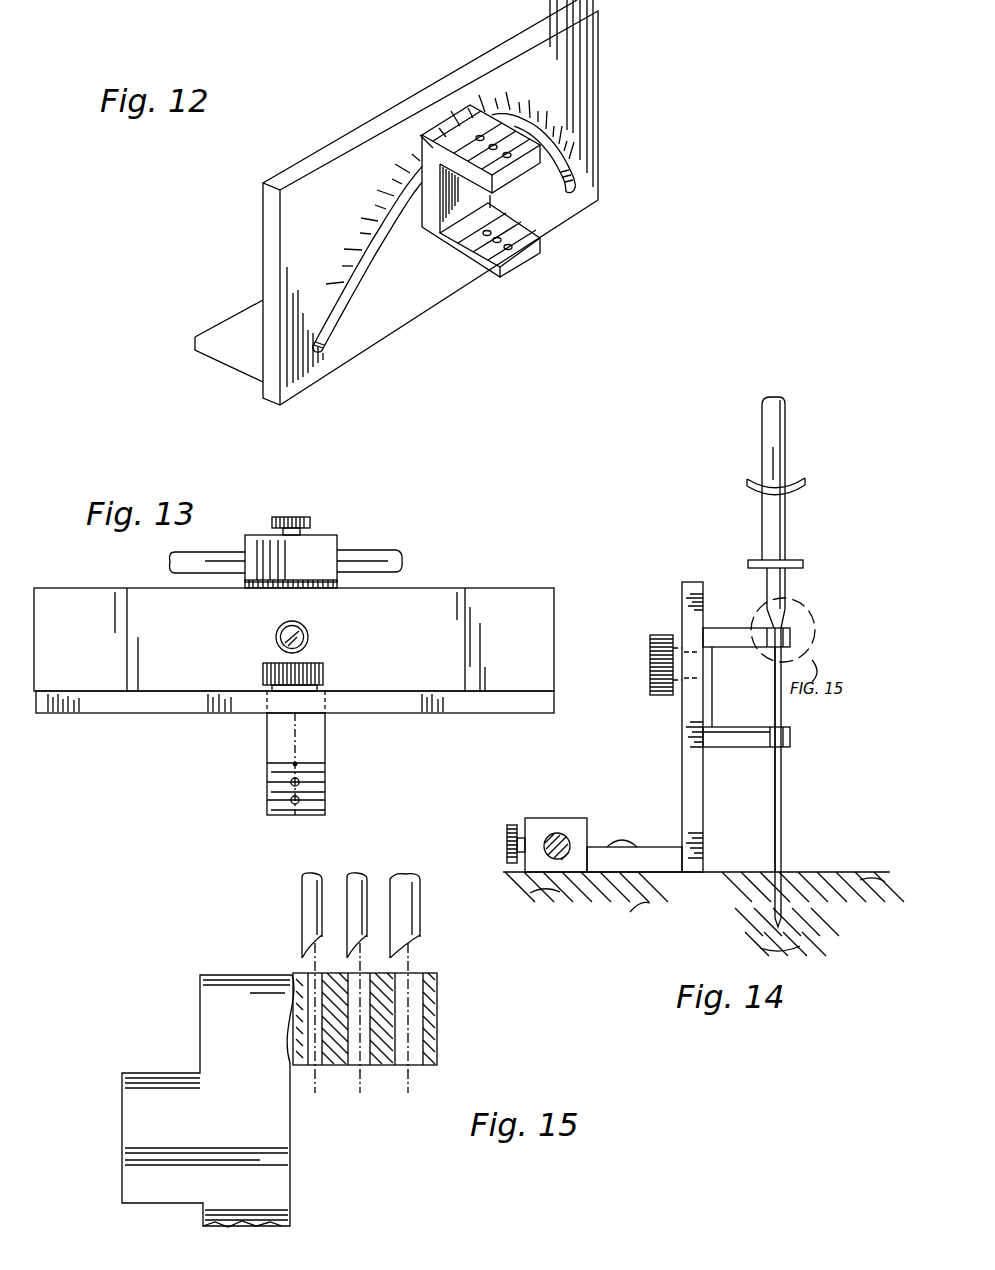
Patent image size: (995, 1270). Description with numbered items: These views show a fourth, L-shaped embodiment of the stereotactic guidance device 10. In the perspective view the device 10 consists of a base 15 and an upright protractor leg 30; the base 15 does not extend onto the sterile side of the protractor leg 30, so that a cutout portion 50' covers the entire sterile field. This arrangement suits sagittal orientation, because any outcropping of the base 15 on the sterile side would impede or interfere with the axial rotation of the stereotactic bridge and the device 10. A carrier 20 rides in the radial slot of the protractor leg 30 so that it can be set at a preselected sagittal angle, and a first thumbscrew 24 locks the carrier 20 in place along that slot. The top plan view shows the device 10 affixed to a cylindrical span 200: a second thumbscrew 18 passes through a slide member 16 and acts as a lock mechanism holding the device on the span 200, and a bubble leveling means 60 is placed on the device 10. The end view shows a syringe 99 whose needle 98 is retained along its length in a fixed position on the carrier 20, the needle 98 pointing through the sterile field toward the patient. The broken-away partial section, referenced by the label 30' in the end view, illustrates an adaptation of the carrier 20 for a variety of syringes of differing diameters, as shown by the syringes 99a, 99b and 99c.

In FIG. 12, the guidance device 10 is at (317, 147).
In FIG. 12, the base 15 is at (210, 334).
In FIG. 13, the base 15 is at (493, 588).
In FIG. 12, the carrier 20 is at (450, 110).
In FIG. 13, the carrier 20 is at (308, 750).
In FIG. 14, the carrier 20 is at (742, 628).
In FIG. 15, the carrier 20 is at (210, 1032).
In FIG. 12, the protractor leg 30 is at (483, 214).
In FIG. 12, the cutout portion 50' is at (439, 302).
In FIG. 13, the slide member 16 is at (323, 548).
In FIG. 14, the slide member 16 is at (601, 797).
In FIG. 13, the second thumbscrew 18 is at (307, 513).
In FIG. 14, the second thumbscrew 18 is at (516, 824).
In FIG. 13, the span 200 is at (402, 551).
In FIG. 13, the bubble leveling means 60 is at (308, 640).
In FIG. 13, the marking assembly 30' is at (245, 764).
In FIG. 14, the marking assembly 30' is at (703, 853).
In FIG. 14, the first thumbscrew 24 is at (651, 648).
In FIG. 14, the syringe 99 is at (773, 434).
In FIG. 14, the needle 98 is at (783, 823).
In FIG. 15, the syringe 99a is at (302, 914).
In FIG. 15, the syringe 99b is at (364, 882).
In FIG. 15, the syringe 99c is at (396, 917).